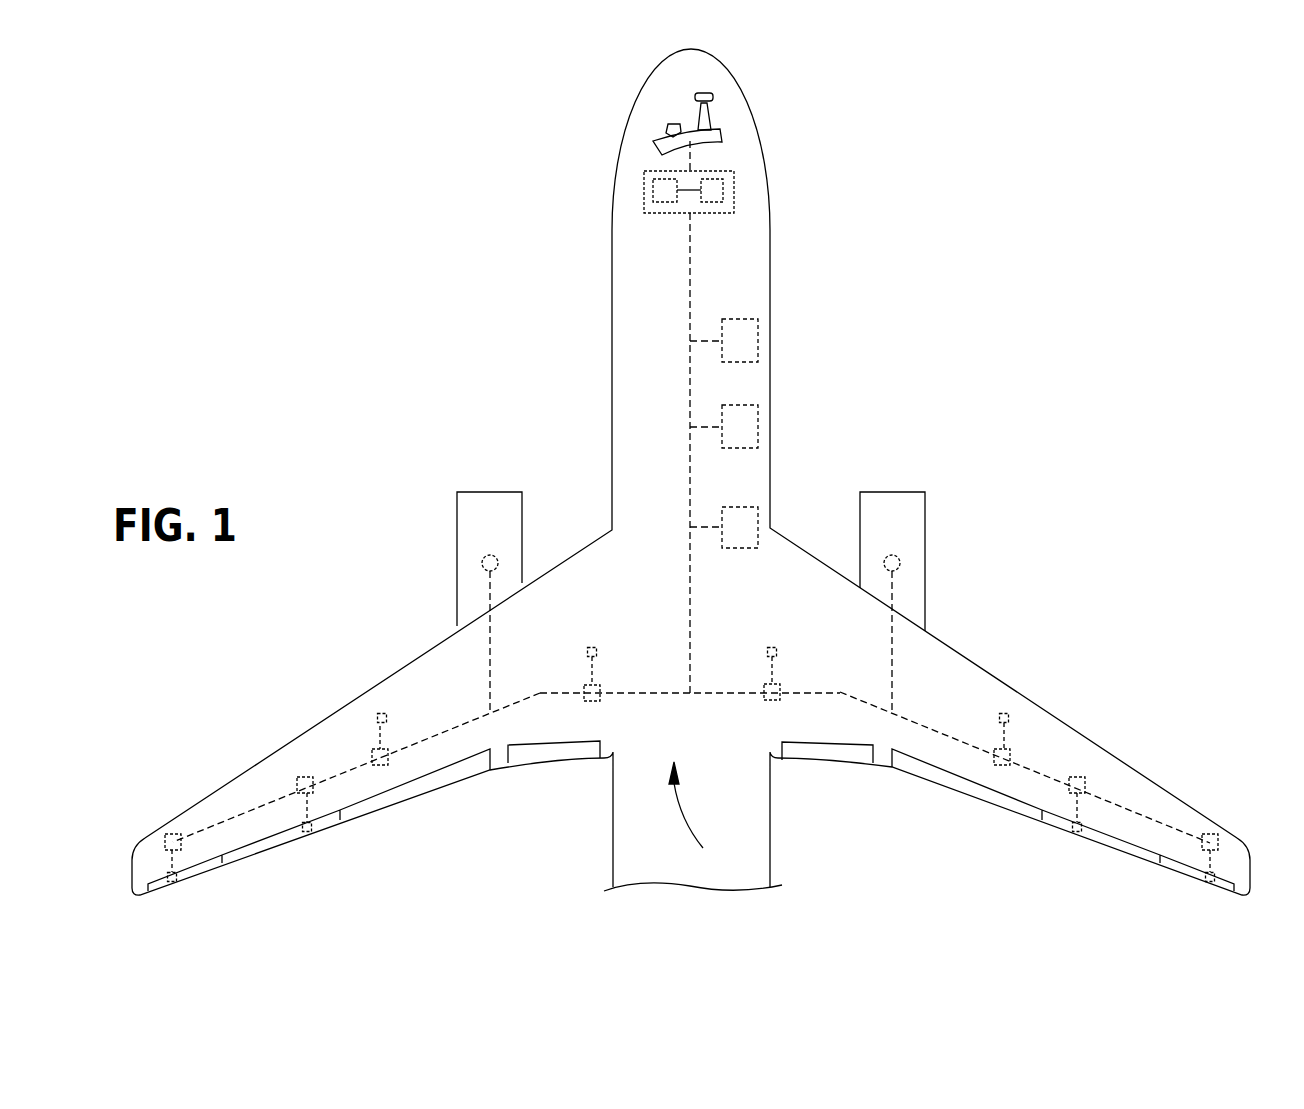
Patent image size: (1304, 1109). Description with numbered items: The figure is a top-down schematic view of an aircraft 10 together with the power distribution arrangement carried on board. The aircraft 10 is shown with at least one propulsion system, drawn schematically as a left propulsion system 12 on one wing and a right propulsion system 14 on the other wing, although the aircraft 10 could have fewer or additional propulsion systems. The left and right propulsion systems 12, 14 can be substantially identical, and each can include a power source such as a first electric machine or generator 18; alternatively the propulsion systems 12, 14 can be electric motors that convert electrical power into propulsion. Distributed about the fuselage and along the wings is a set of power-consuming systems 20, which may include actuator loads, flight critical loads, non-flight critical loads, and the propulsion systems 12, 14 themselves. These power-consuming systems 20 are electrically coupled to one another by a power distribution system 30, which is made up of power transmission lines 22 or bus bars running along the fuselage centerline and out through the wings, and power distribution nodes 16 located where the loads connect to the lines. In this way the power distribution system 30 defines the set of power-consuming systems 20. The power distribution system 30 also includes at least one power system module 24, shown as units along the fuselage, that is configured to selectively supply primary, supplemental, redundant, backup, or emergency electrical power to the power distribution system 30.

The aircraft 10 is at (503, 83).
The left propulsion system 12 is at (489, 515).
The right propulsion system 14 is at (905, 515).
The power distribution node 16 is at (592, 702).
The generator 18 is at (498, 560).
The power-consuming system 20 is at (655, 203).
The power transmission line 22 is at (690, 395).
The power system module 24 is at (728, 353).
The power distribution system 30 is at (701, 817).